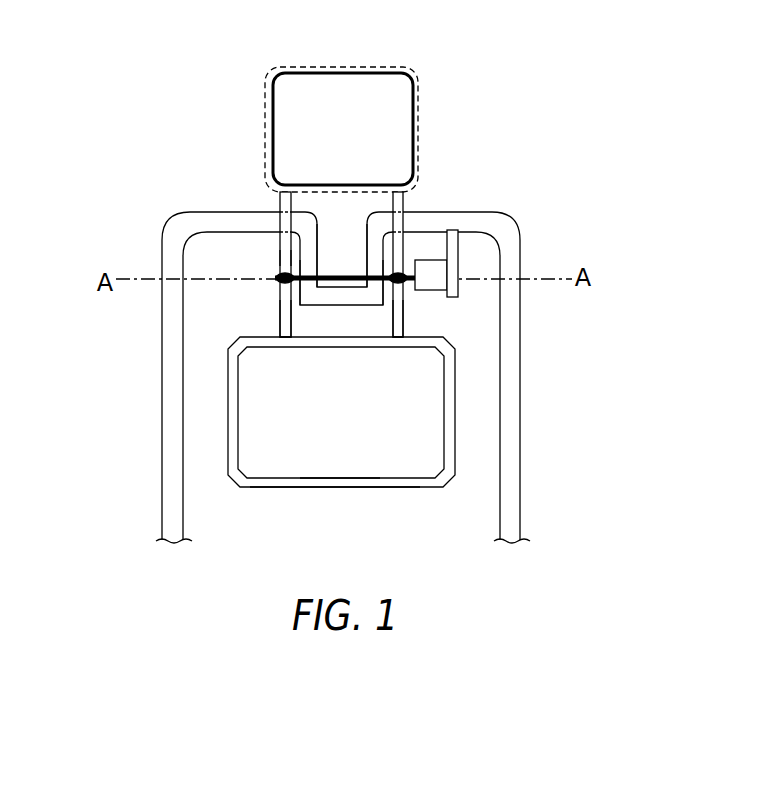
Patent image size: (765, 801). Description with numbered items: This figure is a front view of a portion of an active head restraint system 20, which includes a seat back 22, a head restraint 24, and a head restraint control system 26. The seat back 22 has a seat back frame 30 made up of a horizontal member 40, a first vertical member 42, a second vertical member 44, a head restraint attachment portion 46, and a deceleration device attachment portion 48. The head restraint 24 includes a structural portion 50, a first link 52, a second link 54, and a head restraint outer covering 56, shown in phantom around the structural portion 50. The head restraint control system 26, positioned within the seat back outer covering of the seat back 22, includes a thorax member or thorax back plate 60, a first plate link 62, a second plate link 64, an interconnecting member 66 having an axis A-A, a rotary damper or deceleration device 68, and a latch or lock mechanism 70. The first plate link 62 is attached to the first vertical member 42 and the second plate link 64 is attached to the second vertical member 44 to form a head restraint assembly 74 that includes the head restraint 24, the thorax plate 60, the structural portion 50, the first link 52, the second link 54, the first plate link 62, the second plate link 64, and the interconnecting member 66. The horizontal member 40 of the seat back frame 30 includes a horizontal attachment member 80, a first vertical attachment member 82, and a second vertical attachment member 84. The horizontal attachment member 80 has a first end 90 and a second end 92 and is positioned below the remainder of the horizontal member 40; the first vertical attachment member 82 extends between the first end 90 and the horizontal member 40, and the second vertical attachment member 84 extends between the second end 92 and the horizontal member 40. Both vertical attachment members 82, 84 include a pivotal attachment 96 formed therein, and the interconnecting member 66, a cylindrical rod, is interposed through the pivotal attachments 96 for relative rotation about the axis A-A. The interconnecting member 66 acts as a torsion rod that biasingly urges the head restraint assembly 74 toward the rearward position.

The active head restraint system 20 is at (334, 341).
The seat back 22 is at (439, 440).
The head restraint 24 is at (384, 97).
The head restraint control system 26 is at (475, 337).
The seat back frame 30 is at (500, 233).
The horizontal member 40 is at (223, 227).
The first vertical member 42 is at (522, 416).
The second vertical member 44 is at (161, 425).
The head restraint attachment portion 46 is at (296, 257).
The deceleration device attachment portion 48 is at (453, 250).
The structural portion 50 is at (414, 131).
The first link 52 is at (404, 203).
The second link 54 is at (279, 203).
The head restraint outer covering 56 is at (302, 64).
The thorax member 60 is at (406, 489).
The first plate link 62 is at (405, 312).
The second plate link 64 is at (280, 312).
The interconnecting member 66 is at (345, 275).
The deceleration device 68 is at (430, 270).
The lock mechanism 70 is at (338, 490).
The head restraint assembly 74 is at (280, 490).
The horizontal attachment member 80 is at (360, 297).
The first vertical attachment member 82 is at (373, 230).
The second vertical attachment member 84 is at (308, 230).
The first end 90 is at (375, 298).
The second end 92 is at (310, 298).
The pivotal attachment 96 is at (283, 338).